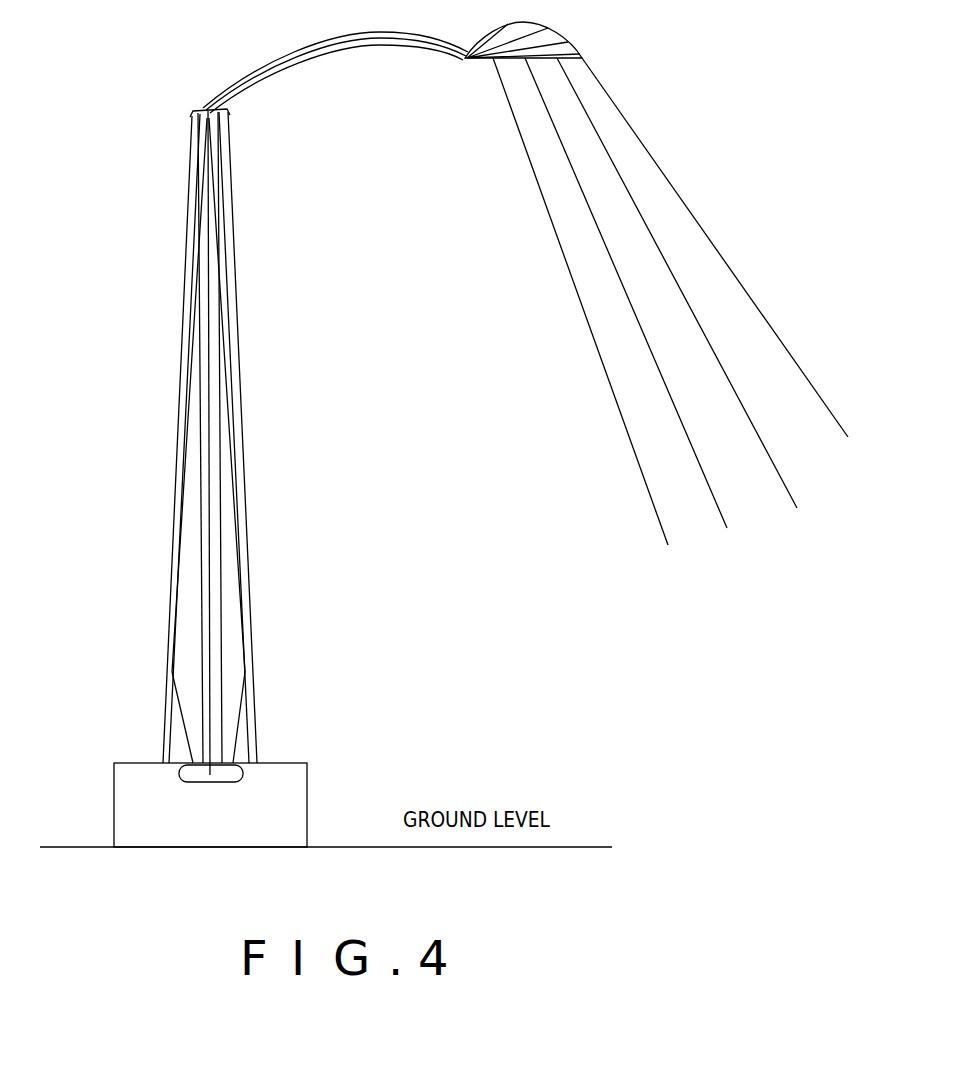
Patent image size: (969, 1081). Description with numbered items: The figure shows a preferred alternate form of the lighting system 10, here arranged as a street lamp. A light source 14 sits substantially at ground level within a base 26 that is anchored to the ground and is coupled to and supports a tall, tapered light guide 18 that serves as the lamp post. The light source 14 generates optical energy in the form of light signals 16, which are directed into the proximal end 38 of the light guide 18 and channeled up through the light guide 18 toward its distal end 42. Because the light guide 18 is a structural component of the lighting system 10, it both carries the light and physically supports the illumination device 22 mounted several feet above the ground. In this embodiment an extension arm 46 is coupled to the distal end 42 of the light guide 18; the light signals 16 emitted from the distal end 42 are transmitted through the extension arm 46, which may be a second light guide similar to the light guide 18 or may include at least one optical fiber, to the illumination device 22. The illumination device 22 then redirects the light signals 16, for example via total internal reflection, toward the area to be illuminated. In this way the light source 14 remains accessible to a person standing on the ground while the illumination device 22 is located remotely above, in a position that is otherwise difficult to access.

The lighting system 10 is at (122, 263).
The light source 14 is at (243, 780).
The light signals 16 is at (762, 315).
The light guide 18 is at (177, 460).
The illumination device 22 is at (582, 58).
The base 26 is at (137, 811).
The proximal end 38 is at (237, 747).
The distal end 42 is at (205, 126).
The extension arm 46 is at (287, 52).